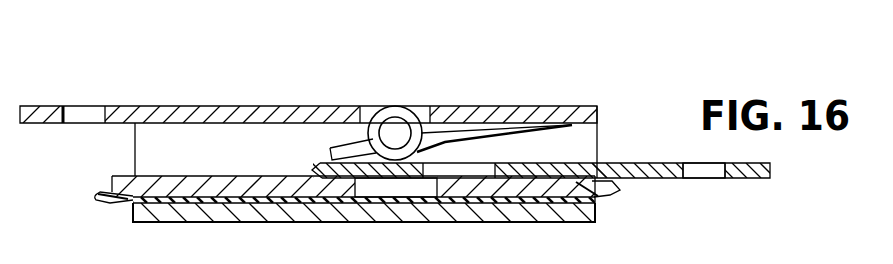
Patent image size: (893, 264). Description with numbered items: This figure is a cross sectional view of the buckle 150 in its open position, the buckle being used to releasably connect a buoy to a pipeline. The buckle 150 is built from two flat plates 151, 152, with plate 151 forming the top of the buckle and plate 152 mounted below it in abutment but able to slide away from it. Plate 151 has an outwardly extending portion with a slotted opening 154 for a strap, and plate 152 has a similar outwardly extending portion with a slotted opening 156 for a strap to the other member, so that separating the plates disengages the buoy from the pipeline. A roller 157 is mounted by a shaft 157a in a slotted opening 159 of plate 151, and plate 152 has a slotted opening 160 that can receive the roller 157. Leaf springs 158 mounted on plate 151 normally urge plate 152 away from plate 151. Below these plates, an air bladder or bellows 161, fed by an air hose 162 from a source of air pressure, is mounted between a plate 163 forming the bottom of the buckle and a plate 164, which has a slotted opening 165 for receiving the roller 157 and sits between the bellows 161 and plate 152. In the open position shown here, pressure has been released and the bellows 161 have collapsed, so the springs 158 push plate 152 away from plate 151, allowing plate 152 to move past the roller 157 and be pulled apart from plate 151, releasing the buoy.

The buckle 150 is at (307, 84).
The flat plate 151 is at (156, 110).
The flat plate 152 is at (655, 160).
The slotted opening 154 is at (83, 113).
The slotted opening 156 is at (712, 179).
The roller 157 is at (386, 115).
The shaft 157a is at (397, 128).
The leaf springs 158 is at (447, 128).
The slotted opening 159 is at (432, 118).
The slotted opening 160 is at (478, 168).
The air bladder or bellows 161 is at (598, 208).
The air hose 162 is at (108, 206).
The plate 163 is at (548, 222).
The plate 164 is at (604, 194).
The slotted opening 165 is at (372, 188).